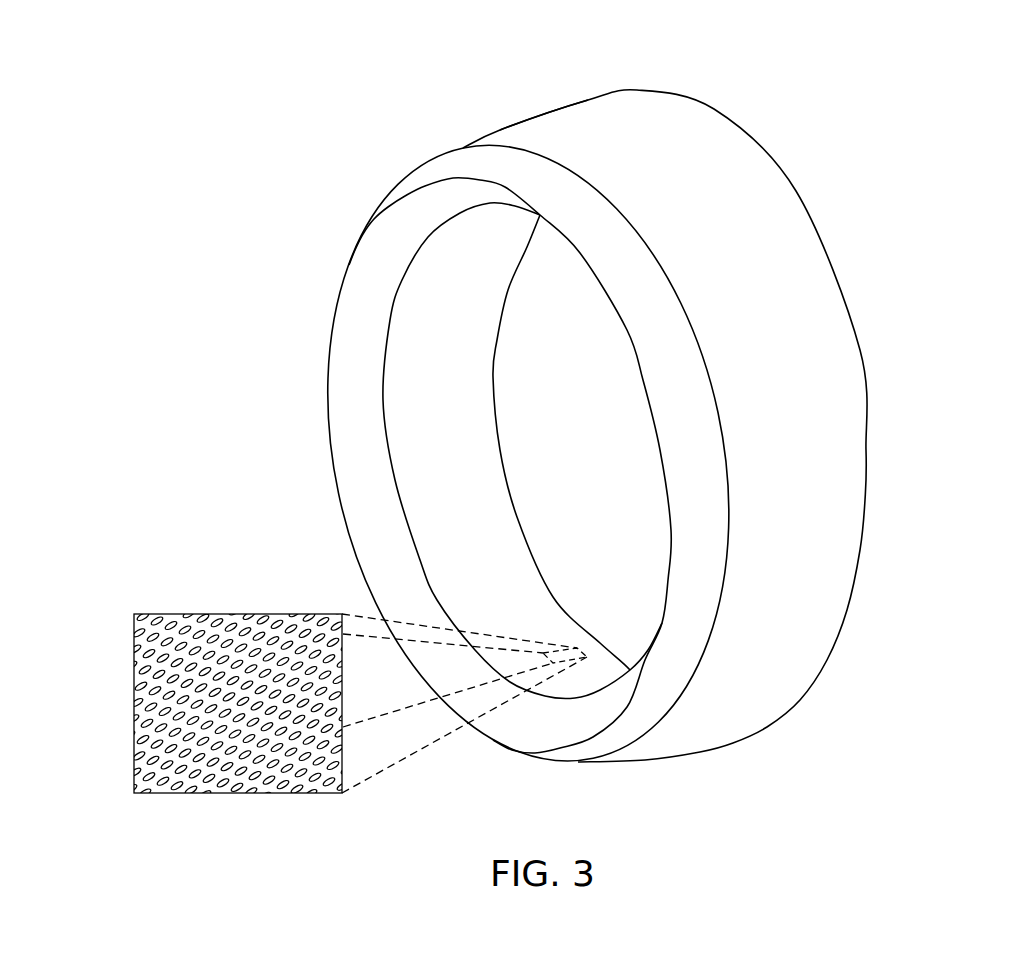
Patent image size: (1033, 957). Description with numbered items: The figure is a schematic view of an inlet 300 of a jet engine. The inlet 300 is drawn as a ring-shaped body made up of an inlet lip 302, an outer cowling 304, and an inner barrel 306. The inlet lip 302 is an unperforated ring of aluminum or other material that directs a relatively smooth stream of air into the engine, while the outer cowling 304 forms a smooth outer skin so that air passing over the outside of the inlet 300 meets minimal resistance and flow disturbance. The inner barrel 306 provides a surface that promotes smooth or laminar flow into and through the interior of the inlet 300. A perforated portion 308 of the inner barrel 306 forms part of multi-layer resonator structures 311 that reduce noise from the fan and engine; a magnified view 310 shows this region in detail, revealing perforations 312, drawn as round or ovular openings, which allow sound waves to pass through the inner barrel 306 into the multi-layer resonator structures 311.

The inlet 300 is at (272, 101).
The inlet lip 302 is at (670, 283).
The outer cowling 304 is at (588, 100).
The inner barrel 306 is at (500, 537).
The perforated portion 308 is at (552, 608).
The magnified view of engraved region 310 is at (327, 793).
The multi-layer resonator structures 311 is at (160, 773).
The perforations 312 is at (170, 793).